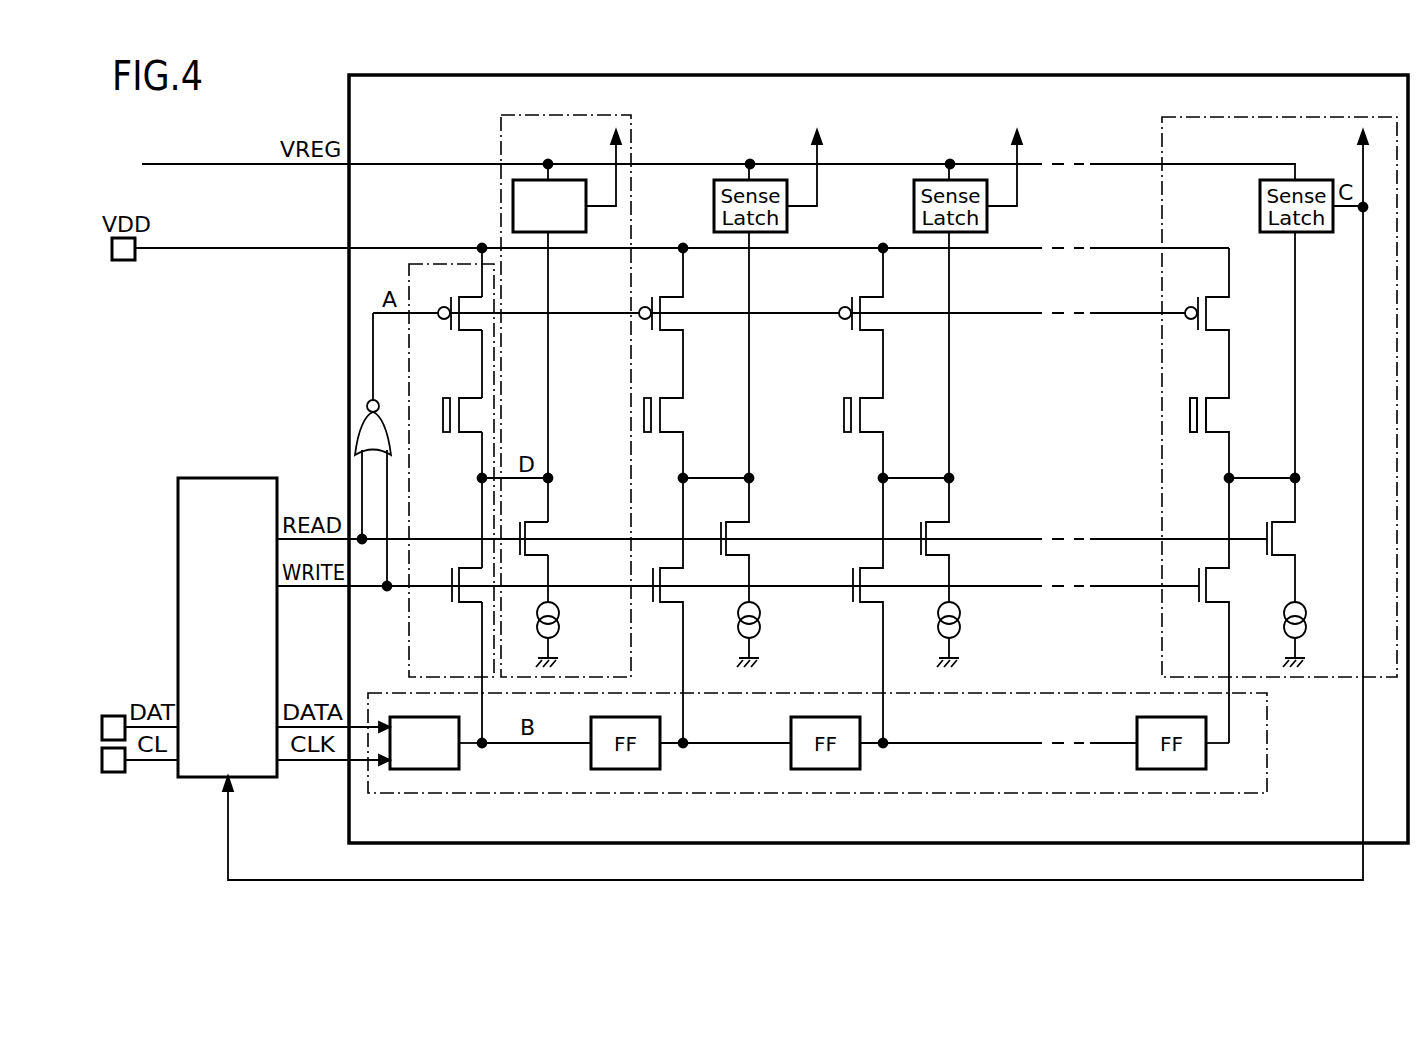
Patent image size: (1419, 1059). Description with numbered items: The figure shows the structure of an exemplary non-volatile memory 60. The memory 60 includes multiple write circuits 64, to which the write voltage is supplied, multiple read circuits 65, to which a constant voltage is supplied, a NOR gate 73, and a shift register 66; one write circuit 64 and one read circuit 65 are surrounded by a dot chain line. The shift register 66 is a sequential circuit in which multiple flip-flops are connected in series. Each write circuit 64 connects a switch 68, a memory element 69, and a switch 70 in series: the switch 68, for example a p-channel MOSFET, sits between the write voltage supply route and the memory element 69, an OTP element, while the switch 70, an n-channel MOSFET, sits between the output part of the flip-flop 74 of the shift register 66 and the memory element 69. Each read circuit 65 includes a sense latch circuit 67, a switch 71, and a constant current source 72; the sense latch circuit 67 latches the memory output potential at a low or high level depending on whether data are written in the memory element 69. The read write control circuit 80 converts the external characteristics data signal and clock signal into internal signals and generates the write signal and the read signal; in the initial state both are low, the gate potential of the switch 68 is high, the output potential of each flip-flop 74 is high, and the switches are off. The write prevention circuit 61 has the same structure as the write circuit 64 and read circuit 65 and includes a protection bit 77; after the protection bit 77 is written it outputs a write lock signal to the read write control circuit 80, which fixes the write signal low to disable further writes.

The memory 60 is at (1310, 74).
The write prevention circuit 61 is at (1267, 428).
The write circuit 64 is at (409, 284).
The read circuit 65 is at (575, 115).
The shift register 66 is at (1048, 689).
The sense latch circuit 67 is at (587, 223).
The switch 68 is at (451, 300).
The memory element 69 is at (443, 400).
The switch 70 is at (452, 575).
The switch 71 is at (520, 527).
The constant current source 72 is at (537, 628).
The NOR gate 73 is at (384, 424).
The flip-flop 74 is at (460, 763).
The protection bit 77 is at (1190, 398).
The read write control circuit 80 is at (246, 468).